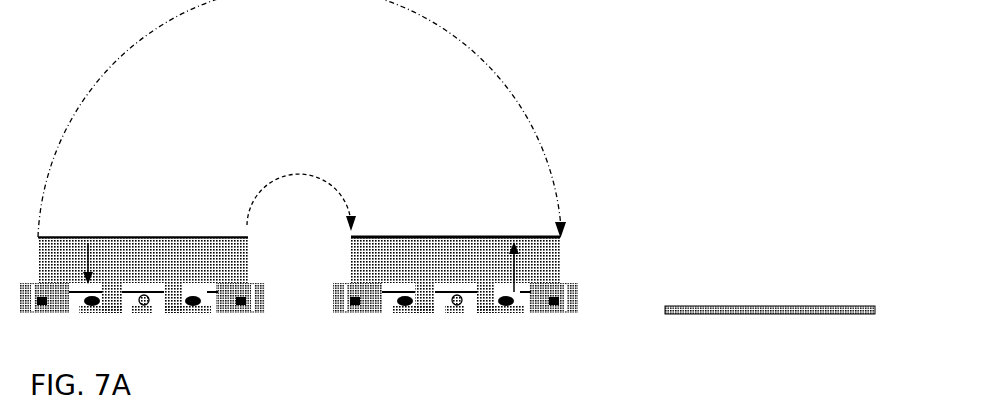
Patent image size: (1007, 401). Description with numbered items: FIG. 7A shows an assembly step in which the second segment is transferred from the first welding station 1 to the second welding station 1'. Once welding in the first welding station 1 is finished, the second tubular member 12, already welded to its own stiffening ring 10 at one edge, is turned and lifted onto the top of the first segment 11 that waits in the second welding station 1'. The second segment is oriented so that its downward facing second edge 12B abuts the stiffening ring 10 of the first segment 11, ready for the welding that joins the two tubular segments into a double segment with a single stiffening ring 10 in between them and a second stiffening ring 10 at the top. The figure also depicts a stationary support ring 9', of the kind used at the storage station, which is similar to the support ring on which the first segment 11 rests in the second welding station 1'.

The first welding station 1 is at (142, 195).
The second welding station 1' is at (458, 196).
The second tubular member 12 is at (202, 250).
The second edge of the second segment 12B is at (153, 237).
The first segment 11 is at (440, 247).
The stiffening ring 10 is at (152, 293).
The stationary support ring 9' is at (770, 248).